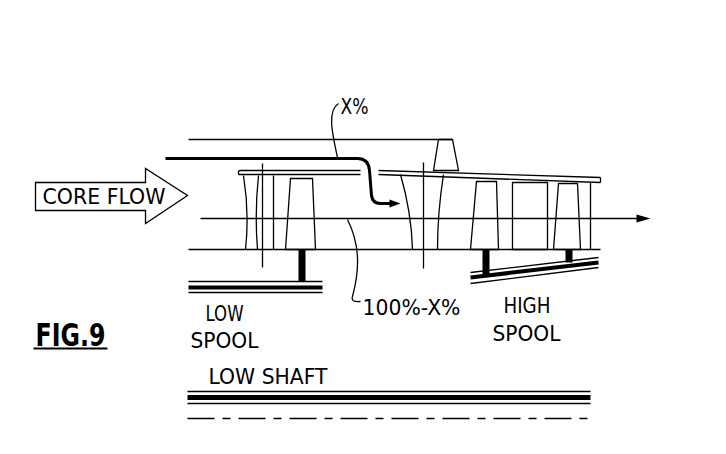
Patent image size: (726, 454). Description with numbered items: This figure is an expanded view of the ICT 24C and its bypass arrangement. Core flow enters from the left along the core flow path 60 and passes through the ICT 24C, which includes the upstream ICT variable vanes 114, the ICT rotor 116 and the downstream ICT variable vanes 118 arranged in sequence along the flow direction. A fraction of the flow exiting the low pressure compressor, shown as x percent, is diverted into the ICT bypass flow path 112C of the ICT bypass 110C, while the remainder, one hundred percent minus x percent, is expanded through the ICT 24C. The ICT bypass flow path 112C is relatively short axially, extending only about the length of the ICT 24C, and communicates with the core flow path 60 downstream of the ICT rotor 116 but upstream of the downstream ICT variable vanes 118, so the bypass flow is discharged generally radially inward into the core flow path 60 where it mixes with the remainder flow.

The ICT bypass 110C is at (494, 134).
The core flow path 60 is at (230, 207).
The ICT 24C is at (487, 87).
The upstream ICT variable vanes 114 is at (256, 180).
The ICT rotor 116 is at (303, 187).
The ICT bypass flow path 112C is at (384, 150).
The downstream ICT variable vanes 118 is at (441, 139).